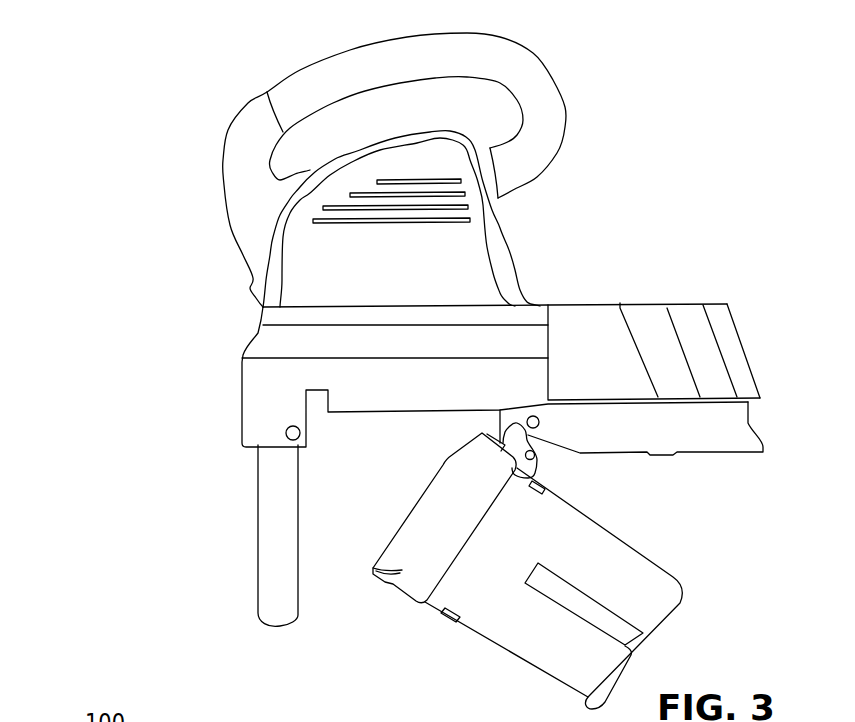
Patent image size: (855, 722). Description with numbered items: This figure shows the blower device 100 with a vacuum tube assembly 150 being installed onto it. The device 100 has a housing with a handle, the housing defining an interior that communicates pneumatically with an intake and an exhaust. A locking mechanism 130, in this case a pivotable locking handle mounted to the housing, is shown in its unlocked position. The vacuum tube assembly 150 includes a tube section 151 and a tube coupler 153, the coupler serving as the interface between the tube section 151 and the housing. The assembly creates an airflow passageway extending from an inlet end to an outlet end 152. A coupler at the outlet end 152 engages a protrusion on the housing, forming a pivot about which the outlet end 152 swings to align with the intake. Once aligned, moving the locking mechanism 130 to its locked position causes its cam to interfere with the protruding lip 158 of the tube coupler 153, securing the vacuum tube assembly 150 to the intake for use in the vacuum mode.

The device 100 is at (493, 244).
The locking mechanism 130 is at (258, 580).
The vacuum tube assembly 150 is at (571, 516).
The tube section 151 is at (660, 573).
The outlet end 152 is at (410, 518).
The tube coupler 153 is at (440, 517).
The protruding lip 158 is at (367, 583).